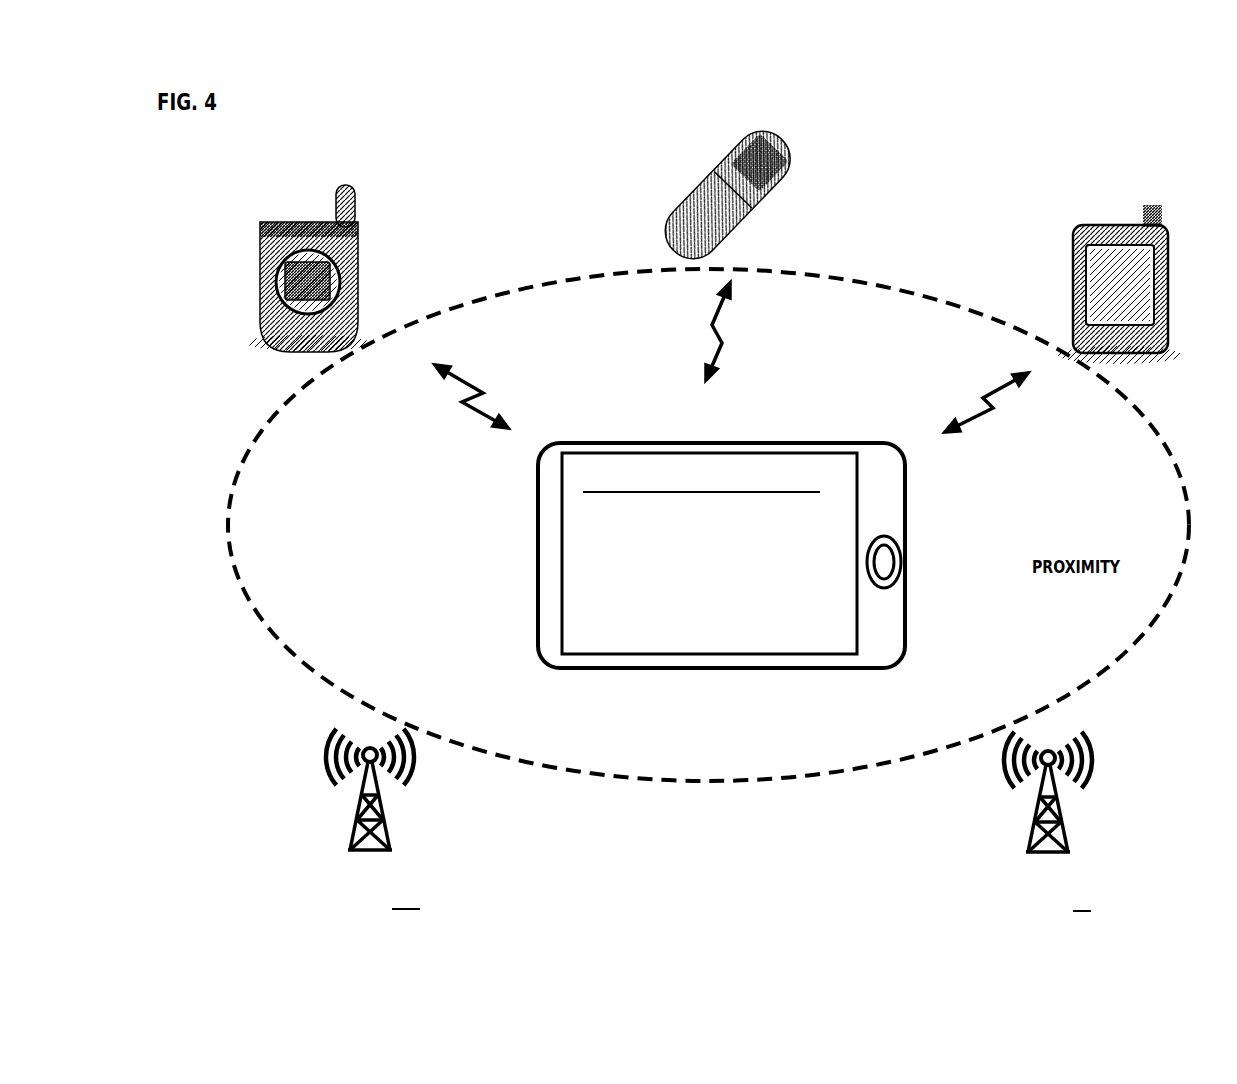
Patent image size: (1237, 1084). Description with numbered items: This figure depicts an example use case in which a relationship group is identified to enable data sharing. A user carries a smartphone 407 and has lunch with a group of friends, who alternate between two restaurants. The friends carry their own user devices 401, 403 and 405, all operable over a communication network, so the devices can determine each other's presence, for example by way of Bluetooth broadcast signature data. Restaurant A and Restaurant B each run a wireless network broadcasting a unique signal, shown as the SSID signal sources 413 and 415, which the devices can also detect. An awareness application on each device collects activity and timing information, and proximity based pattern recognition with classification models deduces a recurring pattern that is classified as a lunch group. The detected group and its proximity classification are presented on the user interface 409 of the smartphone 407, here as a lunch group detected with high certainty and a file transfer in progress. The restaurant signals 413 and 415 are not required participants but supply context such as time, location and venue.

The user device 401 is at (371, 222).
The user device 403 is at (686, 195).
The user device 405 is at (1068, 250).
The smartphone 407 is at (523, 580).
The user interface 409 is at (612, 645).
The unique signal (SSID) 413 is at (370, 819).
The unique signal (SSID) 415 is at (1041, 821).